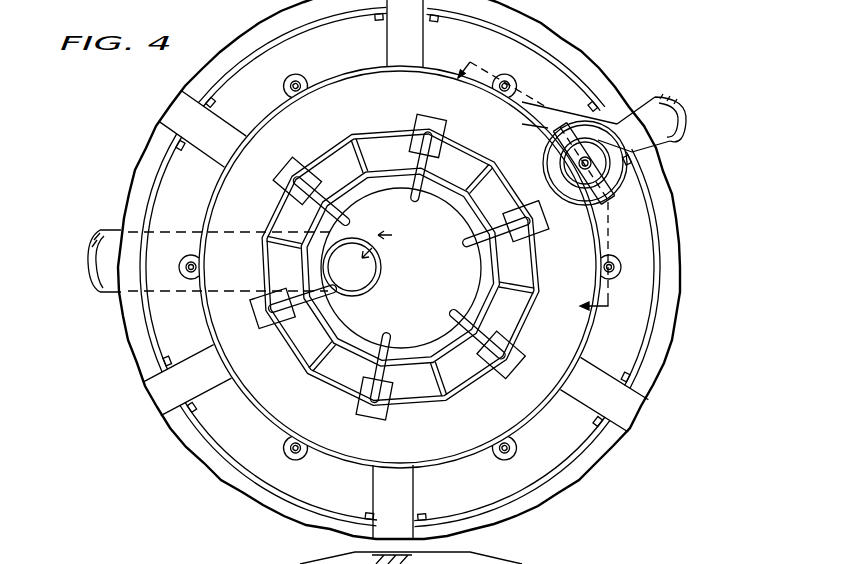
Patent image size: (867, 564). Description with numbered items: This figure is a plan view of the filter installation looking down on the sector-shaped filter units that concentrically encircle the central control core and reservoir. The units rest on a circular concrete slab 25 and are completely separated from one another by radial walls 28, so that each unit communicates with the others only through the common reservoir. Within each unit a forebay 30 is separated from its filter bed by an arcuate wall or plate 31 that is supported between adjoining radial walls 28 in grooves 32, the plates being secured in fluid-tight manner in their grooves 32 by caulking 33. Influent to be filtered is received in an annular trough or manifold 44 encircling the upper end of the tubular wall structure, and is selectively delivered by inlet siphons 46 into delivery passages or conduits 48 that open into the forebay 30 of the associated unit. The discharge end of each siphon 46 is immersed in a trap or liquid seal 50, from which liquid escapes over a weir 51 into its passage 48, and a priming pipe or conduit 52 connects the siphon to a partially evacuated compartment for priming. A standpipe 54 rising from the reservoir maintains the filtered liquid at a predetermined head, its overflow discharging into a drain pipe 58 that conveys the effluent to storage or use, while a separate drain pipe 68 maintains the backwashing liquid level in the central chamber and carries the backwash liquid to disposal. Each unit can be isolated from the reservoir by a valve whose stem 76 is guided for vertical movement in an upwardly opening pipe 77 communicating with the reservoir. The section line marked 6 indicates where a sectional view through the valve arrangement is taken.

The section line 6- 6 is at (526, 189).
The circular concrete slab 25 is at (684, 270).
The radial walls 28 is at (190, 151).
The forebay 30 is at (454, 51).
The arcuate wall or plate 31 is at (152, 194).
The grooves 32 is at (157, 378).
The caulking 33 is at (405, 33).
The annular trough or manifold 44 is at (263, 381).
The inlet siphons 46 is at (352, 399).
The delivery passages or conduits 48 is at (374, 159).
The trap or liquid seal 50 is at (331, 173).
The weir 51 is at (368, 148).
The priming pipe or conduit 52 is at (386, 412).
The standpipe 54 is at (609, 202).
The drain pipe 58 is at (668, 108).
The drain pipe 68 is at (93, 278).
The stem 76 is at (294, 455).
The pipe 77 is at (281, 445).